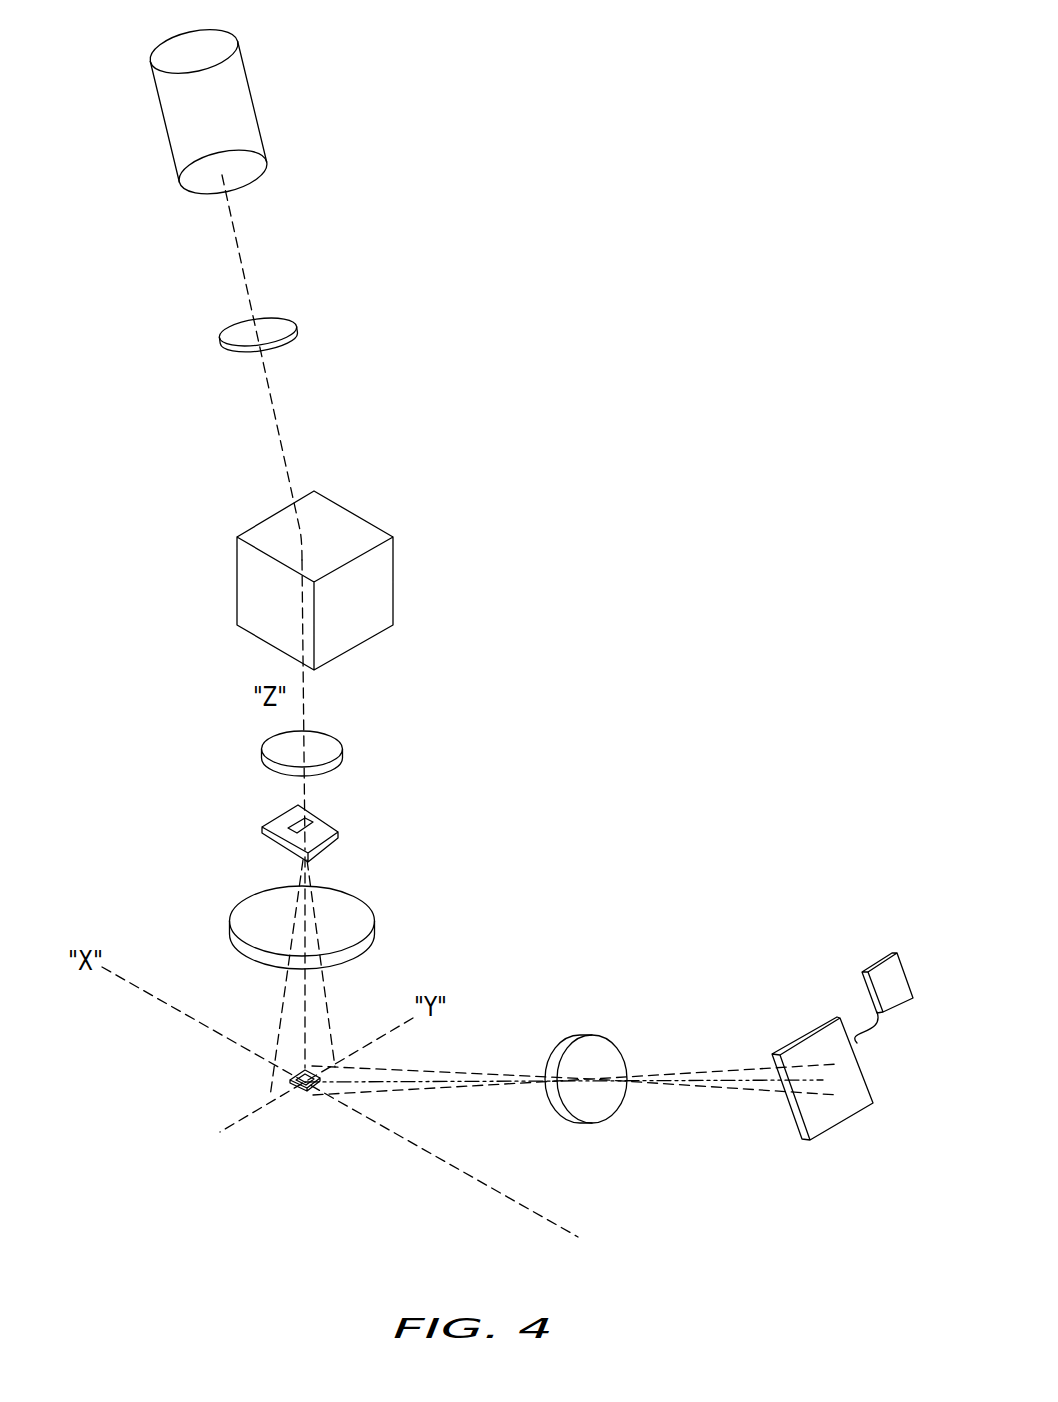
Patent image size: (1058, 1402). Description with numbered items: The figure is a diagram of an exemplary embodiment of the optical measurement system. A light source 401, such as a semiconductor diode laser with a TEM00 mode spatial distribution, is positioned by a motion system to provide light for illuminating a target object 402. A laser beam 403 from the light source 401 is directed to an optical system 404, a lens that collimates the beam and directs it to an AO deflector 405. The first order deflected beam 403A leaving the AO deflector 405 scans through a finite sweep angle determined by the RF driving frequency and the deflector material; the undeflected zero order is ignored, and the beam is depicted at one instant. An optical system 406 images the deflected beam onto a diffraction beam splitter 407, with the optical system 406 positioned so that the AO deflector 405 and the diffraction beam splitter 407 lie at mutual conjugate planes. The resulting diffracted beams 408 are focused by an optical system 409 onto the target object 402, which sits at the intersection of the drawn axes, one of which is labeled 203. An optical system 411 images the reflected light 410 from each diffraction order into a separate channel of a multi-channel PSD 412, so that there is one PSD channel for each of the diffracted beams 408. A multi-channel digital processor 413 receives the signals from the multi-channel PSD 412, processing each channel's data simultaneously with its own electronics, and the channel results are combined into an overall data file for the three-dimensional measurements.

The light source 401 is at (177, 42).
The laser beam 403 is at (238, 252).
The optical system 404 is at (243, 322).
The AO deflector 405 is at (355, 522).
The first order deflected beam 403A is at (303, 698).
The optical system 406 is at (343, 757).
The diffraction beam splitter 407 is at (343, 833).
The optical system 409 is at (230, 913).
The diffracted beams 408 is at (275, 1037).
The target object 402 is at (305, 1097).
The X axis line 203 is at (366, 1113).
The reflected light 410 is at (757, 1088).
The optical system 411 is at (557, 1043).
The multi-channel PSD 412 is at (807, 1027).
The multi-channel digital processor 413 is at (877, 963).